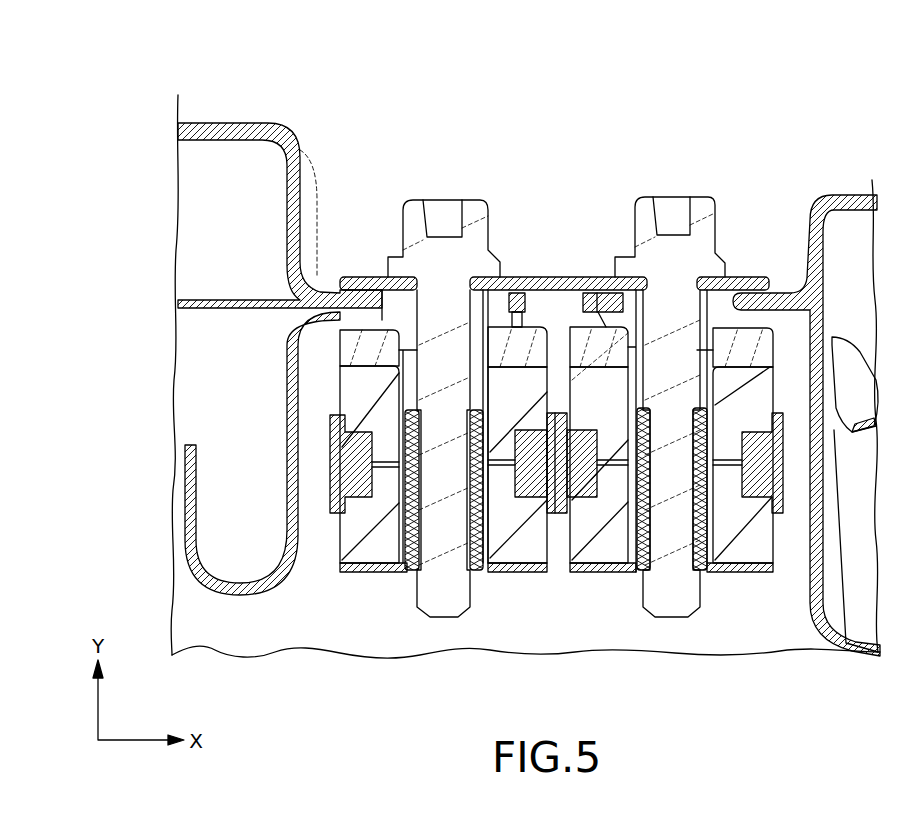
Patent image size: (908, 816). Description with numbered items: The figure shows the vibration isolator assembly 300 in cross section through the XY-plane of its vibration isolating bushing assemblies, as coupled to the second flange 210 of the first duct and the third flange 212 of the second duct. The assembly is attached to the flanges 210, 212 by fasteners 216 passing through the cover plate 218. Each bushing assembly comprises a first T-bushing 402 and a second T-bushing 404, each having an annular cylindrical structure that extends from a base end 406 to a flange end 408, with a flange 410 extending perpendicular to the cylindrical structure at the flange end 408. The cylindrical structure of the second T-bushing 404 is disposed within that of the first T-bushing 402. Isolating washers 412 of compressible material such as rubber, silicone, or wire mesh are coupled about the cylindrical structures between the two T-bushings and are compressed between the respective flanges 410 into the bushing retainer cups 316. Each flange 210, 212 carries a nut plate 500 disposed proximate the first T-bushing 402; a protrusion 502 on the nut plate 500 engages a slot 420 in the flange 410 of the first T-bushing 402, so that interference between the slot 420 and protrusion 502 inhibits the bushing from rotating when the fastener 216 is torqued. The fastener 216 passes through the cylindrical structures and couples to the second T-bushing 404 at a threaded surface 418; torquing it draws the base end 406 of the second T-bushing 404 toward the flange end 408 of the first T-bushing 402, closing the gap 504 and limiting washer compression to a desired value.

The vibration isolator assembly 300 is at (727, 142).
The second flange 210 is at (328, 292).
The third flange 212 is at (787, 290).
The fastener 216 is at (480, 223).
The cover plate 218 is at (500, 282).
The bushing retainer cup 316 is at (337, 427).
The first T-bushing 402 is at (327, 357).
The second T-bushing 404 is at (360, 584).
The base end 406 is at (412, 412).
The flange end 408 is at (405, 362).
The flange 410 is at (517, 570).
The isolating washer 412 is at (357, 387).
The threaded surface 418 is at (483, 430).
The slot 420 is at (490, 352).
The nut plate 500 is at (492, 312).
The protrusion 502 is at (485, 343).
The gap 504 is at (405, 570).